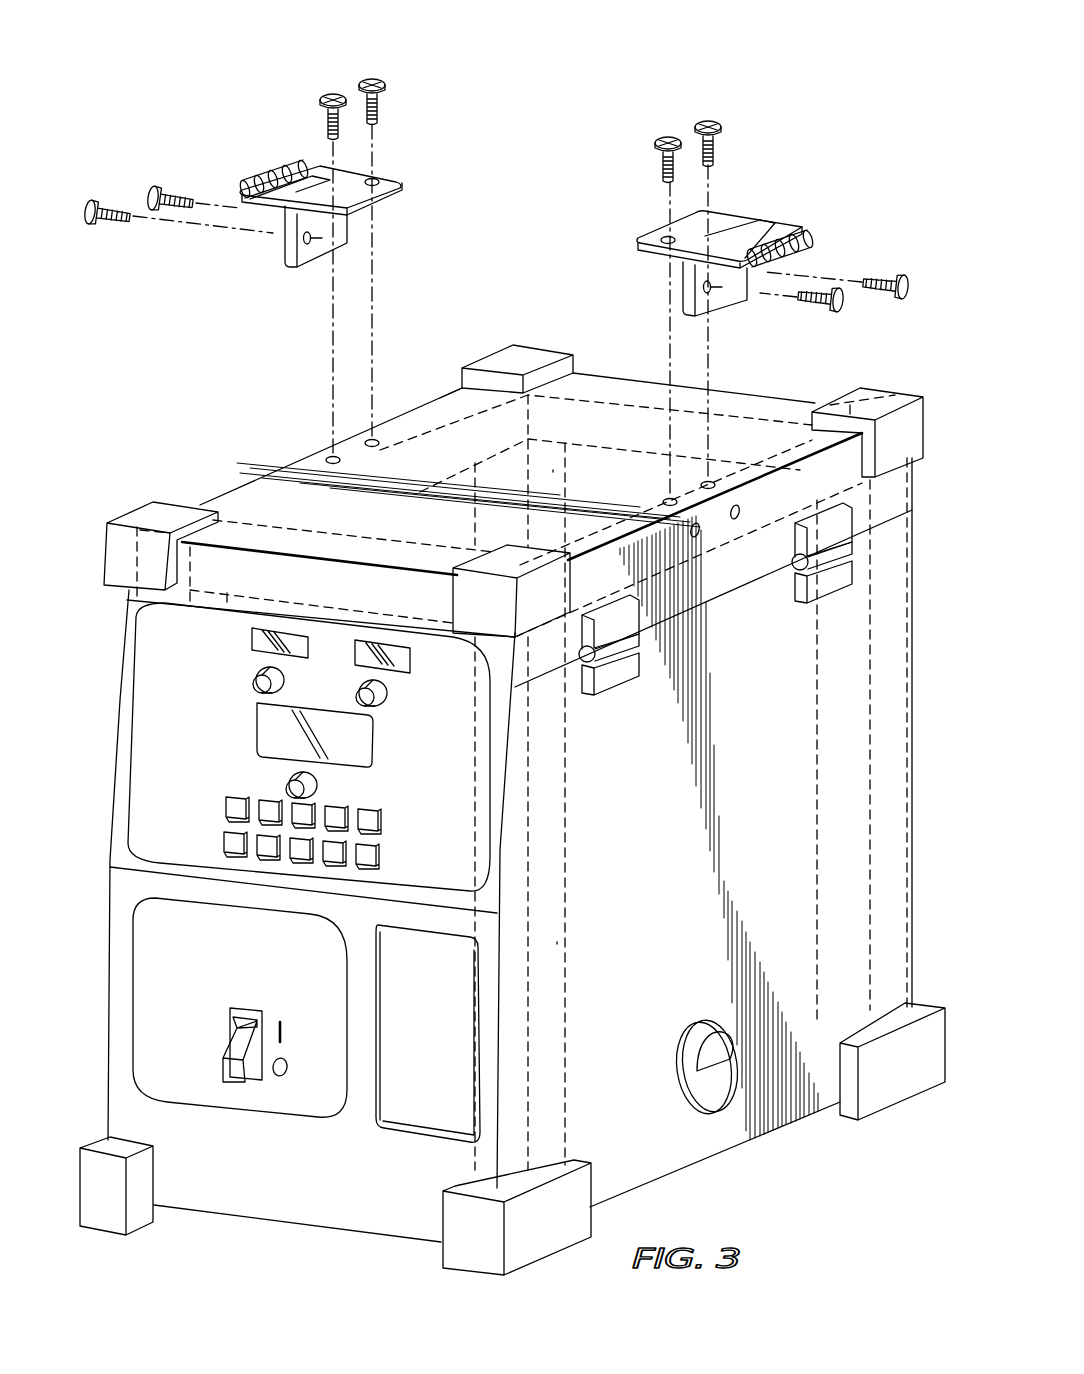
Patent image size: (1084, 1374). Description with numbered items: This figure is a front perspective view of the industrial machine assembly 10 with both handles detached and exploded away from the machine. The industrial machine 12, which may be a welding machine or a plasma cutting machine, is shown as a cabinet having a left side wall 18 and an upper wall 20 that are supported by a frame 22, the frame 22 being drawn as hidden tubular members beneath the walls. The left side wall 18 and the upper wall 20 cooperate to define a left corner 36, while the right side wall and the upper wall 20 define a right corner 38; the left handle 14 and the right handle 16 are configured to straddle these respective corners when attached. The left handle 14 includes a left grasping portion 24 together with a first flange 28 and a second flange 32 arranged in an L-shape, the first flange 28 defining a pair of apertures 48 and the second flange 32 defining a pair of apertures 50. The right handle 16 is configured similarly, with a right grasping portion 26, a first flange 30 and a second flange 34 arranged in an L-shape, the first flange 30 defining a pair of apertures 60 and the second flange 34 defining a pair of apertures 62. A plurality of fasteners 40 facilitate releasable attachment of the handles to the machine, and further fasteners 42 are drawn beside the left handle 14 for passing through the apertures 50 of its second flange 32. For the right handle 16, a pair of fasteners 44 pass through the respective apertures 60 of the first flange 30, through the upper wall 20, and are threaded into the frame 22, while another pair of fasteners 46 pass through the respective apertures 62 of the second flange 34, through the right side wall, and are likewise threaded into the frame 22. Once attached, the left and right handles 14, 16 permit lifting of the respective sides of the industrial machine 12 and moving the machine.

The industrial machine assembly 10 is at (170, 58).
The industrial machine 12 is at (241, 458).
The left handle 14 is at (780, 186).
The right handle 16 is at (292, 102).
The left side wall 18 is at (660, 1156).
The upper wall 20 is at (603, 380).
The frame 22 is at (553, 470).
The left grasping portion 24 is at (806, 246).
The right grasping portion 26 is at (280, 170).
The first flange 28 is at (735, 224).
The first flange 30 is at (390, 180).
The second flange 32 is at (683, 290).
The second flange 34 is at (285, 250).
The left corner 36 is at (805, 466).
The right corner 38 is at (430, 403).
The fasteners 40 is at (668, 135).
The screws 42 is at (852, 302).
The fasteners 44 is at (333, 92).
The fasteners 46 is at (128, 208).
The apertures 48 is at (665, 235).
The apertures 50 is at (720, 290).
The apertures 60 is at (350, 200).
The apertures 62 is at (310, 240).